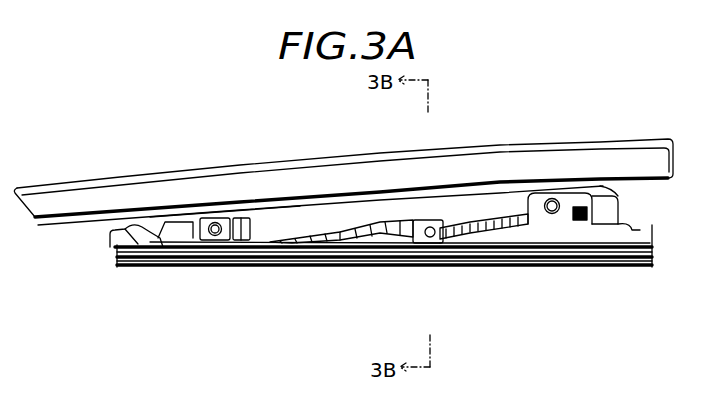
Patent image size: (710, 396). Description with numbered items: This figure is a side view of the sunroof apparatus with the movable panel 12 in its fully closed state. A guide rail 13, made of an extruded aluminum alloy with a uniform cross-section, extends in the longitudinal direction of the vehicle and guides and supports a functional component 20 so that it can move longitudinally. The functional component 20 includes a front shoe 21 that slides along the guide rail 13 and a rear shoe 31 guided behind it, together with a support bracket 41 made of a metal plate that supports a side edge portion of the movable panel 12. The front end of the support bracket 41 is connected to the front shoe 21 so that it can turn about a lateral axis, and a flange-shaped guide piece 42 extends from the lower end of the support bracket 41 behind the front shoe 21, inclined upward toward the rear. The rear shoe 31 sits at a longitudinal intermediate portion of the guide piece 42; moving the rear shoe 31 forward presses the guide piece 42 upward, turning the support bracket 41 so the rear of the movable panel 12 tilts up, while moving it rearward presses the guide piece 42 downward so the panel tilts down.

The movable panel 12 is at (532, 143).
The functional component 20 is at (505, 176).
The support bracket 41 is at (600, 215).
The front shoe 21 is at (133, 267).
The guide piece 42 is at (365, 257).
The rear shoe 31 is at (405, 258).
The guide rail 13 is at (493, 262).